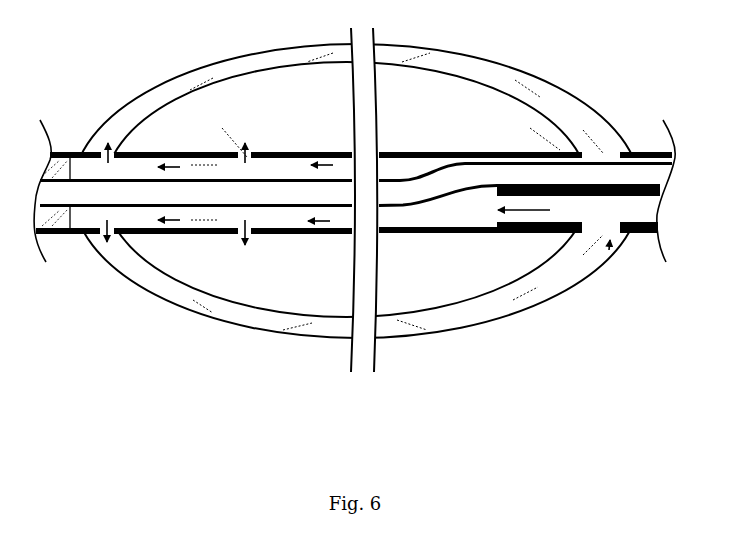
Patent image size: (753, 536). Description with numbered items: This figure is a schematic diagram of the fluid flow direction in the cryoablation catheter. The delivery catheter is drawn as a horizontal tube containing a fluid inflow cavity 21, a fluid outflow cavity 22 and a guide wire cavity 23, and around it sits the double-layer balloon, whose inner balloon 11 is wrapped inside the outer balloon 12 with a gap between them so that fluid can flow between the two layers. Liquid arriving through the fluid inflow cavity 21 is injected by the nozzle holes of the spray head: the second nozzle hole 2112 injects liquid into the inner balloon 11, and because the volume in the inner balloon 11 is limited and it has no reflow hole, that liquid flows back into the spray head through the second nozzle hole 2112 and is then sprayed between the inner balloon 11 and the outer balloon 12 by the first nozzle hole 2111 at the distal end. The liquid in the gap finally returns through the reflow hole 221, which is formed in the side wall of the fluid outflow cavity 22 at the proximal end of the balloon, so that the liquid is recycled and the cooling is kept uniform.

The inner balloon 11 is at (402, 318).
The outer balloon 12 is at (313, 322).
The fluid inflow cavity 21 is at (56, 241).
The first nozzle hole 2111 is at (107, 253).
The second nozzle hole 2112 is at (247, 262).
The guide wire cavity 23 is at (192, 200).
The fluid outflow cavity 22 is at (650, 242).
The reflow hole 221 is at (608, 252).